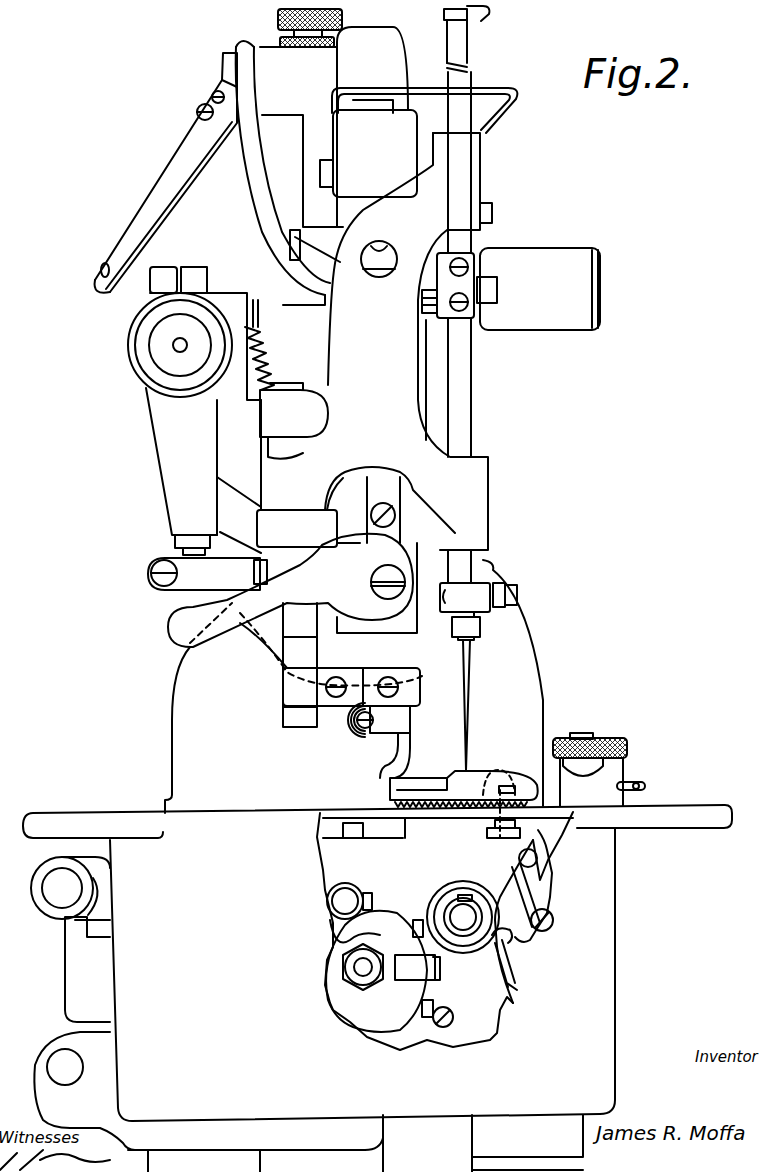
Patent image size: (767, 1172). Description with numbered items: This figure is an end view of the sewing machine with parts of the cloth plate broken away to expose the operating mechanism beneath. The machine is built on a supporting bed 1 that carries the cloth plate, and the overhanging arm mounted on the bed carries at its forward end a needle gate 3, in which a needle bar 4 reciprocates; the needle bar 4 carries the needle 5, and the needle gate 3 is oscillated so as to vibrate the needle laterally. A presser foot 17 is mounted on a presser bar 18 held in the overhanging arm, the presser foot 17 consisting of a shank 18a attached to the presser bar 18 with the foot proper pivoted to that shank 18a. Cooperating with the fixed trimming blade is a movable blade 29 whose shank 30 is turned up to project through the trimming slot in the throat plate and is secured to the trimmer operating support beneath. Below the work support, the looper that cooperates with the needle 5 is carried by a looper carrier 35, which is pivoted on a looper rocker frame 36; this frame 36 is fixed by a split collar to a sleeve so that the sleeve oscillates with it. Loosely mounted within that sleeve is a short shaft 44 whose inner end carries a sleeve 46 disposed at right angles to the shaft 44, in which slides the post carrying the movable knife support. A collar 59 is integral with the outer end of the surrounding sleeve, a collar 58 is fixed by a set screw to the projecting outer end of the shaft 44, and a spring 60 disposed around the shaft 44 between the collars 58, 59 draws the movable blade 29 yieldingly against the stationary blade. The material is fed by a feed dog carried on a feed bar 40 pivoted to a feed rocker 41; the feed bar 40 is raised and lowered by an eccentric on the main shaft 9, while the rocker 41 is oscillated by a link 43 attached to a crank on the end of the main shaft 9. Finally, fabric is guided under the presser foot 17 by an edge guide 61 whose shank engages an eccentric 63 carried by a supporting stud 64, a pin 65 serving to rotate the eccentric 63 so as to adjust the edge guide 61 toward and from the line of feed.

The supporting bed 1 is at (402, 1140).
The needle gate 3 is at (374, 341).
The needle bar 4 is at (469, 383).
The needle 5 is at (472, 685).
The main shaft 9 is at (360, 970).
The presser foot 17 is at (395, 801).
The presser bar 18 is at (392, 651).
The shank 18a is at (392, 738).
The movable blade 29 is at (500, 790).
The shank 30 is at (560, 842).
The looper carrier 35 is at (537, 883).
The looper rocker frame 36 is at (480, 925).
The feed bar 40 is at (100, 892).
The feed rocker 41 is at (80, 977).
The link 43 is at (353, 938).
The short shaft 44 is at (478, 900).
The sleeve 46 is at (505, 909).
The collar 58 is at (522, 928).
The collar 59 is at (510, 963).
The spring 60 is at (463, 917).
The edge guide 61 is at (588, 770).
The eccentric 63 is at (612, 736).
The supporting stud 64 is at (585, 734).
The pin 65 is at (645, 786).